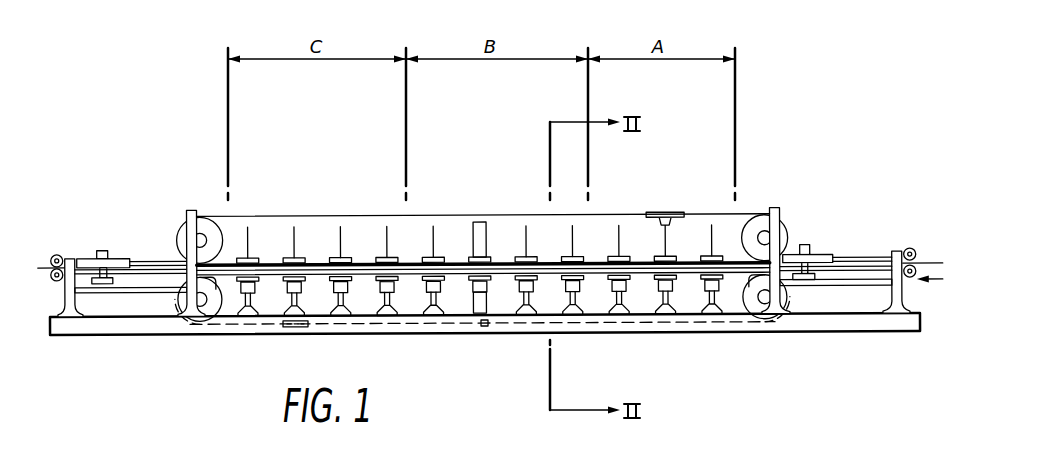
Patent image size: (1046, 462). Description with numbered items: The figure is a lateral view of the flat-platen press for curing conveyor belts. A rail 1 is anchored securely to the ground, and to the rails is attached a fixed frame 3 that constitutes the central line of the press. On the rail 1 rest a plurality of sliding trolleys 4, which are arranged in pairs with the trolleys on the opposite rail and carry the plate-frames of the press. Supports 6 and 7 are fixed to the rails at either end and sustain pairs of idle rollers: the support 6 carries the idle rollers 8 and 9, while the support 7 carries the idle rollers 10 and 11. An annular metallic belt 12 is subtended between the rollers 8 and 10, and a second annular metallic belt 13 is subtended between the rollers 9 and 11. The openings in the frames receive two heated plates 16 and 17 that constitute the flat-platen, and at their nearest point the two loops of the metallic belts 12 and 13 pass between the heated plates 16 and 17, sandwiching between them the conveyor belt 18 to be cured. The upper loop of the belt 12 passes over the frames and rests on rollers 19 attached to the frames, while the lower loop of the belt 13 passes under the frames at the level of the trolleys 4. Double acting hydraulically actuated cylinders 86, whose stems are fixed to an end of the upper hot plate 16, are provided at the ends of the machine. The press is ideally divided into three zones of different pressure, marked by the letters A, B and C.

The rail 1 is at (117, 323).
The fixed frame 3 is at (486, 222).
The trolleys 4 is at (661, 318).
The support 6 is at (187, 218).
The support 7 is at (778, 212).
The idle roller 8 is at (206, 228).
The idle roller 9 is at (214, 310).
The idle roller 10 is at (755, 223).
The idle roller 11 is at (756, 306).
The annular metallic belt 12 is at (287, 214).
The annular metallic belt 13 is at (322, 326).
The heated plate 16 is at (413, 257).
The heated plate 17 is at (412, 277).
The conveyor belt 18 is at (916, 255).
The rollers 19 is at (342, 224).
The double acting hydraulically actuated cylinders 86 is at (83, 258).